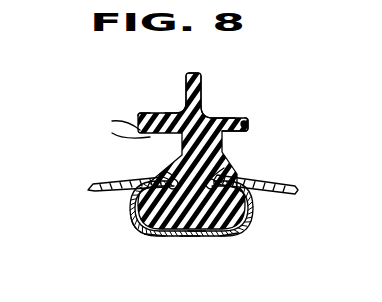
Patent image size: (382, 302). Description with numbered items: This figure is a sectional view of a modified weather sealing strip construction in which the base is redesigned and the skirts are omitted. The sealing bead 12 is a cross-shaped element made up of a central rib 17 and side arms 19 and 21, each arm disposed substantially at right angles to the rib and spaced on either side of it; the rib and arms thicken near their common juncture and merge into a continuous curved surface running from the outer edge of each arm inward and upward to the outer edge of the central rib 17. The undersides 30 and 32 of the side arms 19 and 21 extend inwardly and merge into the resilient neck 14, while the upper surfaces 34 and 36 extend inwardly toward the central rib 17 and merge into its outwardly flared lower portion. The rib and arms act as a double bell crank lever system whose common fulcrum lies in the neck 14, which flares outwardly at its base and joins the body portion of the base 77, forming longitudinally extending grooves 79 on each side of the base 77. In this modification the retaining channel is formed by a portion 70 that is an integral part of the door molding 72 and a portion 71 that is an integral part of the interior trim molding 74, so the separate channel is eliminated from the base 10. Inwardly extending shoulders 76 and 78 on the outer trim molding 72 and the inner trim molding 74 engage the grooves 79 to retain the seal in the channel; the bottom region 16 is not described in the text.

The base 10 is at (250, 216).
The sealing bead 12 is at (221, 101).
The neck 14 is at (150, 137).
The bottom wall of ring 16 is at (190, 234).
The central rib 17 is at (195, 73).
The side arm 19 is at (140, 116).
The side arm 21 is at (246, 123).
The underside of side arm 30 is at (147, 129).
The underside of side arm 32 is at (230, 136).
The upper surface of side arm 34 is at (176, 113).
The upper surface of side arm 36 is at (217, 115).
The retaining channel portion 70 is at (153, 234).
The retaining channel portion 71 is at (233, 233).
The door molding 72 is at (100, 177).
The interior trim molding 74 is at (294, 186).
The shoulder 76 is at (160, 174).
The base body portion 77 is at (195, 233).
The shoulder 78 is at (224, 168).
The groove 79 is at (134, 220).